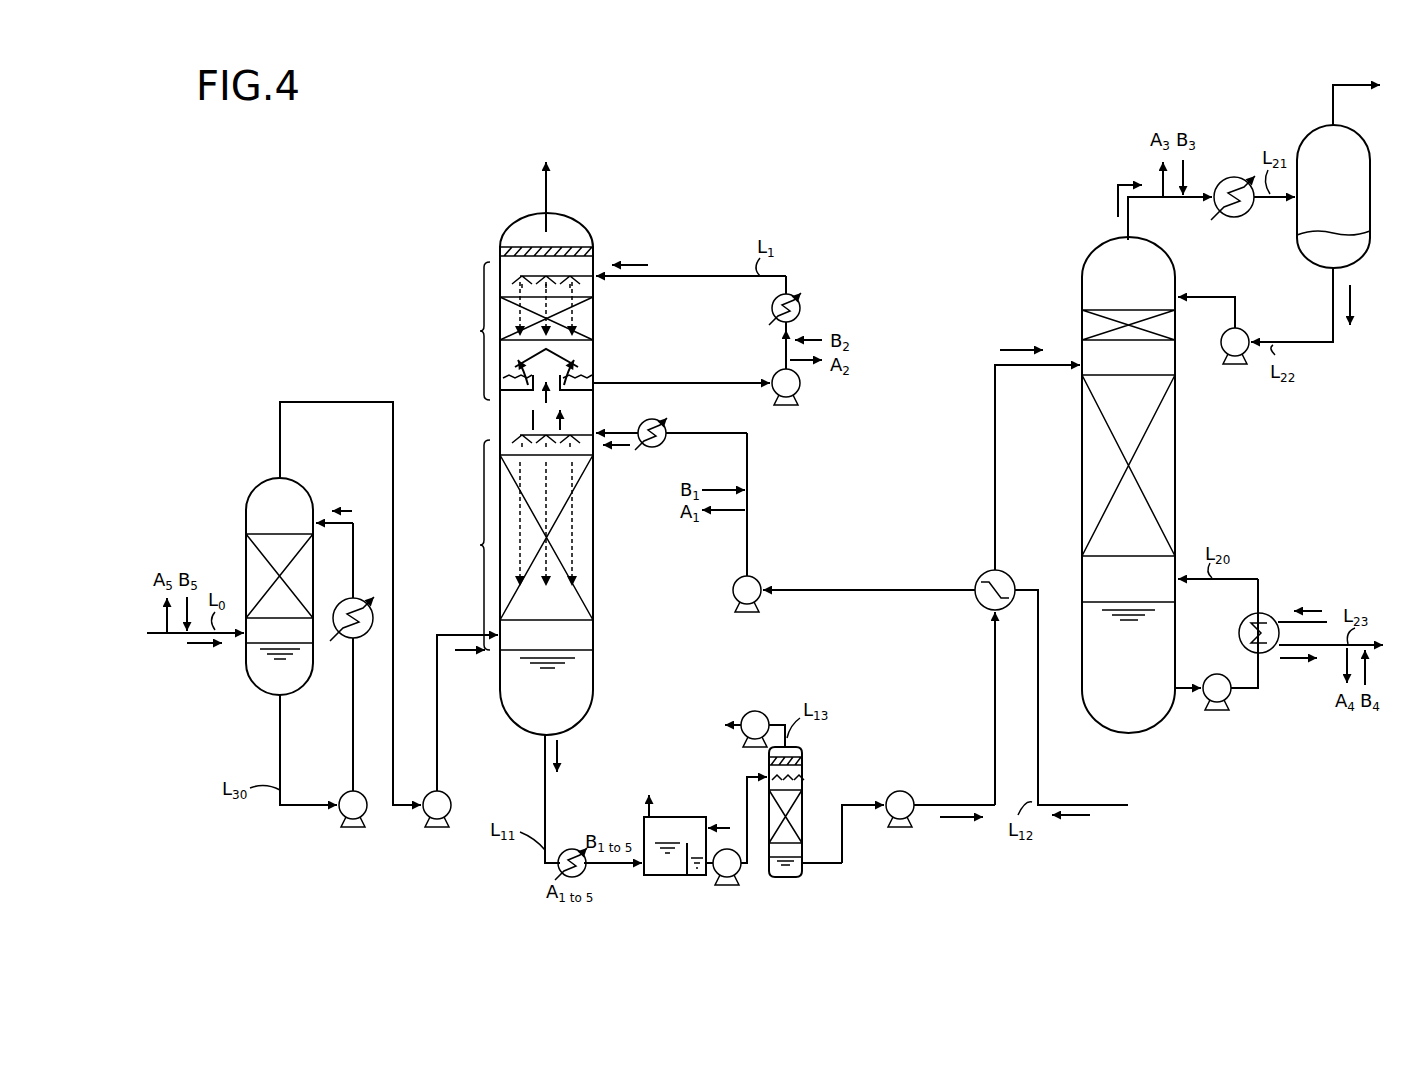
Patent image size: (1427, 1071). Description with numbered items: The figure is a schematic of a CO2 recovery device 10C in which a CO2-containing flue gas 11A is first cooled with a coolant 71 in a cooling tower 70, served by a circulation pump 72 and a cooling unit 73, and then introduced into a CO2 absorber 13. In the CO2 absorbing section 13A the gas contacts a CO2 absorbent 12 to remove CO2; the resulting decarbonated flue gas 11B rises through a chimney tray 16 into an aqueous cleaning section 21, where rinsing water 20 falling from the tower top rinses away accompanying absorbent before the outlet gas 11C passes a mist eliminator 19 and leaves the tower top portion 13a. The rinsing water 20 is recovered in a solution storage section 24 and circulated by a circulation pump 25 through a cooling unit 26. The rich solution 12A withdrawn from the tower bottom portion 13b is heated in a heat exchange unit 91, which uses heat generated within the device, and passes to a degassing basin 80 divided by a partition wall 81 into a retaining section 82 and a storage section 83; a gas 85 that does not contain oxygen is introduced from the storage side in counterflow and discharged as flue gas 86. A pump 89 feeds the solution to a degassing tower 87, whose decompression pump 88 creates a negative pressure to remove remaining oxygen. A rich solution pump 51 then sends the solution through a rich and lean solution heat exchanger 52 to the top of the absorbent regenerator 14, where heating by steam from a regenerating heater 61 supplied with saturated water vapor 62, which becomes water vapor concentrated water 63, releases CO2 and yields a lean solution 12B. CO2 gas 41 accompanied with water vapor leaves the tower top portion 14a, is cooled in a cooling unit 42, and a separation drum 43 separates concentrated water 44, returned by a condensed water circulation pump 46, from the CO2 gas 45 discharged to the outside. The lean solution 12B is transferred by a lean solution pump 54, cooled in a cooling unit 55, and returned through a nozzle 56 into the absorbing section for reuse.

The CO2 recovery device 10C is at (945, 135).
The CO2-containing flue gas 11A is at (470, 655).
The decarbonated flue gas 11B is at (545, 397).
The outlet gas 11C is at (542, 183).
The CO2 absorbent 12 is at (578, 568).
The rich solution 12A is at (1020, 348).
The lean solution 12B is at (610, 447).
The CO2 absorber 13 is at (482, 246).
The tower top portion 13a is at (560, 222).
The CO2 absorbing section 13A is at (482, 545).
The tower bottom portion 13b is at (595, 668).
The absorbent regenerator 14 is at (1188, 452).
The tower top portion 14a is at (1093, 242).
The chimney tray 16 is at (530, 352).
The mist eliminator 19 is at (528, 246).
The rinsing water 20 is at (630, 266).
The aqueous cleaning section 21 is at (482, 331).
The solution storage section 24 is at (596, 378).
The circulation pump 25 is at (802, 388).
The cooling unit 26 is at (806, 308).
The CO2 gas accompanied with water vapor 41 is at (1118, 183).
The cooling unit 42 is at (1234, 177).
The separation drum 43 is at (1297, 236).
The concentrated water 44 is at (1360, 302).
The CO2 gas 45 is at (1333, 84).
The condensed water circulation pump 46 is at (1238, 328).
The rich solution pump 51 is at (890, 816).
The rich and lean solution heat exchanger 52 is at (980, 572).
The lean solution pump 54 is at (755, 580).
The cooling unit 55 is at (668, 425).
The nozzle 56 is at (592, 432).
The regenerating heater 61 is at (1270, 615).
The saturated water vapor 62 is at (1305, 608).
The water vapor concentrated water 63 is at (1290, 662).
The cooling tower 70 is at (236, 486).
The coolant 71 is at (348, 508).
The circulation pump 72 is at (340, 810).
The cooling unit 73 is at (347, 642).
The degassing basin 80 is at (688, 812).
The partition wall 81 is at (684, 860).
The retaining section 82 is at (658, 870).
The storage section 83 is at (698, 870).
The gas that does not contain oxygen 85 is at (720, 825).
The flue gas 86 is at (655, 805).
The degassing tower 87 is at (810, 768).
The decompression pump 88 is at (742, 730).
The pump 89 is at (737, 876).
The heat exchange unit 91 is at (565, 850).